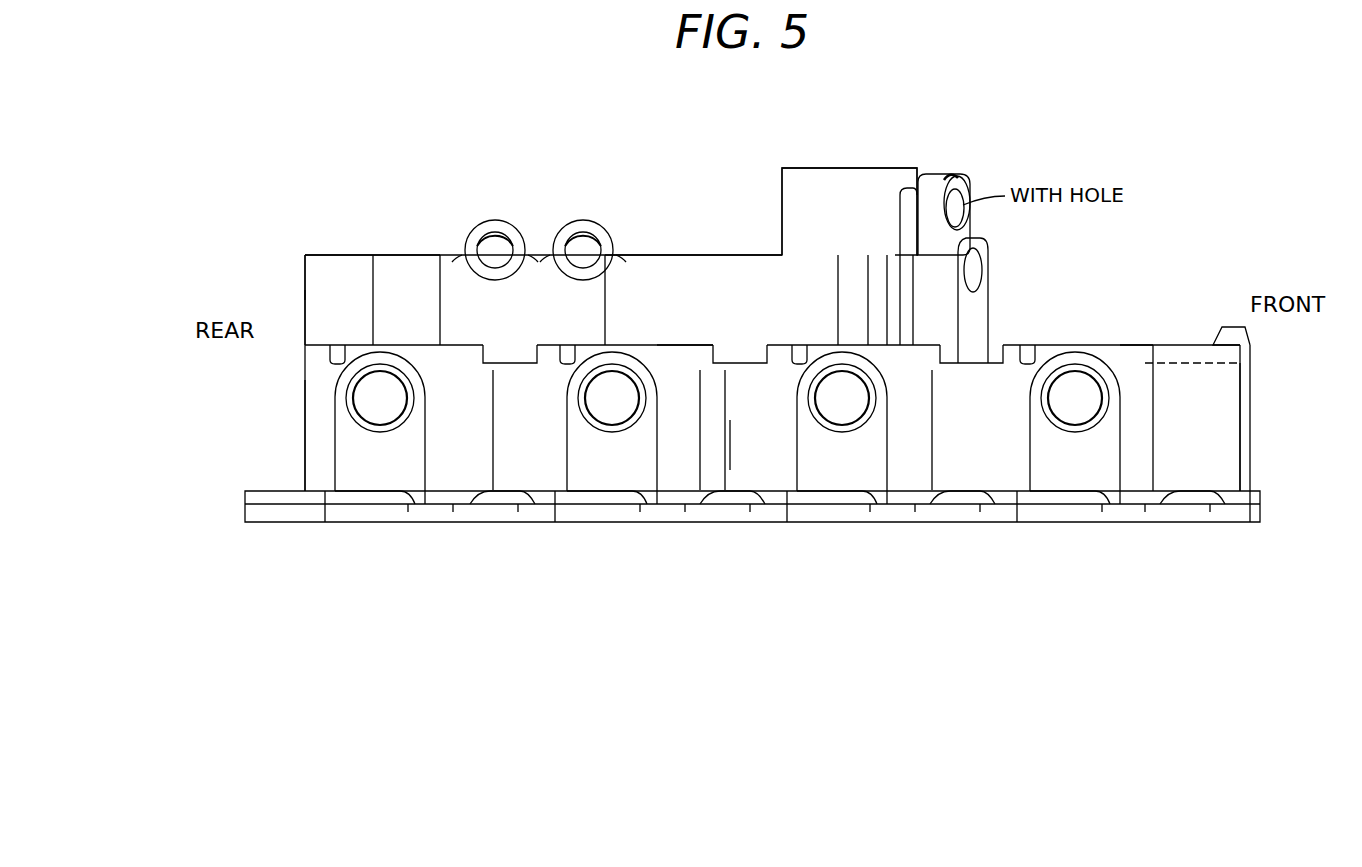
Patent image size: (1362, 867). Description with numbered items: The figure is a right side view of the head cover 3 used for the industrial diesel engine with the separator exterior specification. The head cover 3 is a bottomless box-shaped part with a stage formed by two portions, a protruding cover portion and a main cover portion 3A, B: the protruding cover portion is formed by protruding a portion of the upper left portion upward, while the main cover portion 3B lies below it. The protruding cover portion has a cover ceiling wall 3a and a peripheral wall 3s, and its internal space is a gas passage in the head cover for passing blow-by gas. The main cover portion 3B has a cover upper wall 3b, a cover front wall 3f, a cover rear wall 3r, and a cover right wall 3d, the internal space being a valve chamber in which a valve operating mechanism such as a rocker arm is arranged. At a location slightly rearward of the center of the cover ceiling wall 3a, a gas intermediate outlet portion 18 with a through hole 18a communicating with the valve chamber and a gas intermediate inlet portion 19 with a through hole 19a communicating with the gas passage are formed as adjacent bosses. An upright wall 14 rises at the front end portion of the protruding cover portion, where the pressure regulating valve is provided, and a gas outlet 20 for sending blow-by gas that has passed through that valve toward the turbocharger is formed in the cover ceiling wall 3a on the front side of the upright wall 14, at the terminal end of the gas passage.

The head cover 3 is at (1112, 226).
The cover ceiling wall 3a is at (403, 255).
The cover upper wall 3b is at (695, 345).
The cover right wall 3d is at (763, 450).
The cover front wall 3f is at (1250, 420).
The cover rear wall 3r is at (298, 430).
The peripheral wall 3s is at (308, 298).
The protruding cover portion and main cover portion 3A, B is at (305, 268).
The main cover portion 3B is at (305, 397).
The upright wall 14 is at (782, 176).
The gas intermediate outlet portion 18 is at (579, 221).
The through hole 18a is at (575, 258).
The gas intermediate inlet portion 19 is at (468, 248).
The through hole 19a is at (486, 245).
The gas outlet 20 is at (952, 186).